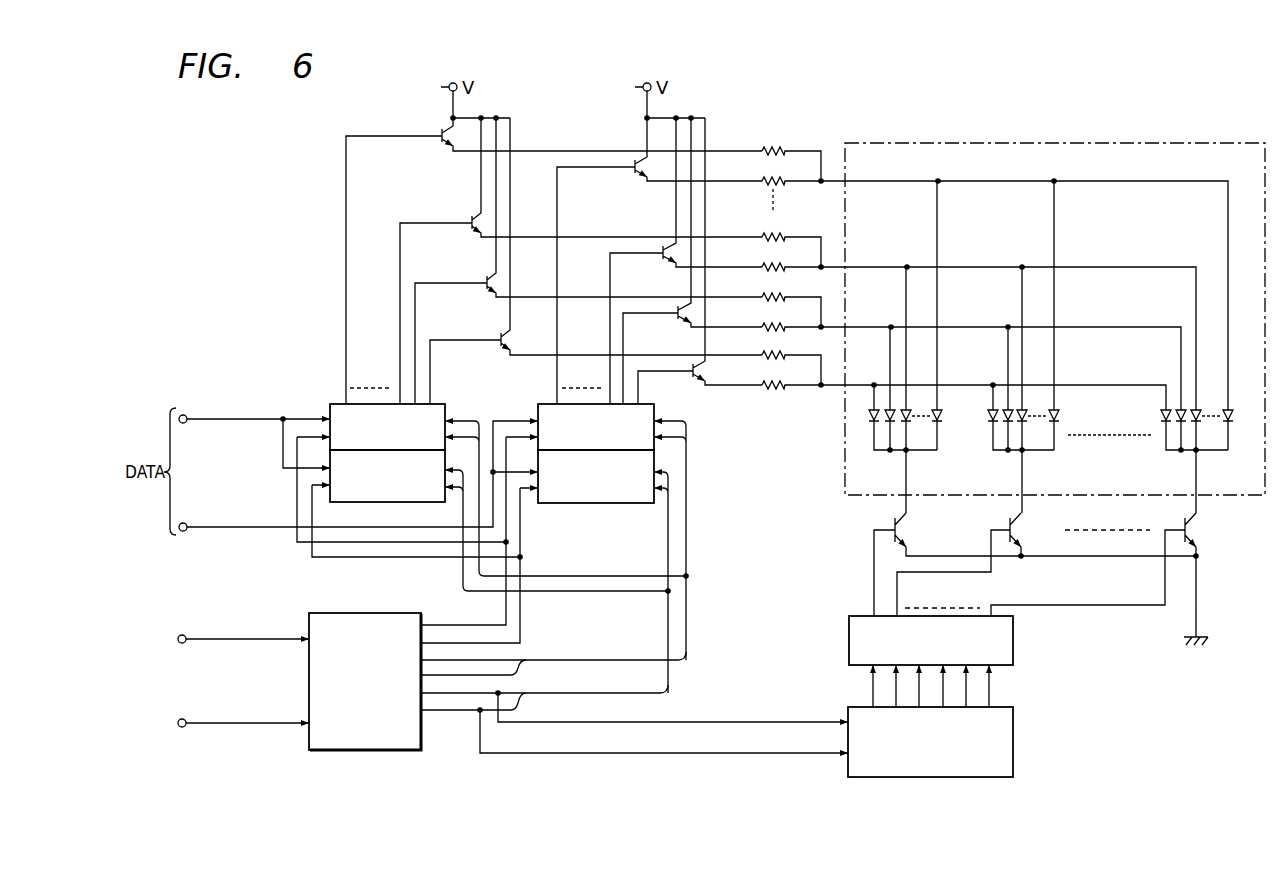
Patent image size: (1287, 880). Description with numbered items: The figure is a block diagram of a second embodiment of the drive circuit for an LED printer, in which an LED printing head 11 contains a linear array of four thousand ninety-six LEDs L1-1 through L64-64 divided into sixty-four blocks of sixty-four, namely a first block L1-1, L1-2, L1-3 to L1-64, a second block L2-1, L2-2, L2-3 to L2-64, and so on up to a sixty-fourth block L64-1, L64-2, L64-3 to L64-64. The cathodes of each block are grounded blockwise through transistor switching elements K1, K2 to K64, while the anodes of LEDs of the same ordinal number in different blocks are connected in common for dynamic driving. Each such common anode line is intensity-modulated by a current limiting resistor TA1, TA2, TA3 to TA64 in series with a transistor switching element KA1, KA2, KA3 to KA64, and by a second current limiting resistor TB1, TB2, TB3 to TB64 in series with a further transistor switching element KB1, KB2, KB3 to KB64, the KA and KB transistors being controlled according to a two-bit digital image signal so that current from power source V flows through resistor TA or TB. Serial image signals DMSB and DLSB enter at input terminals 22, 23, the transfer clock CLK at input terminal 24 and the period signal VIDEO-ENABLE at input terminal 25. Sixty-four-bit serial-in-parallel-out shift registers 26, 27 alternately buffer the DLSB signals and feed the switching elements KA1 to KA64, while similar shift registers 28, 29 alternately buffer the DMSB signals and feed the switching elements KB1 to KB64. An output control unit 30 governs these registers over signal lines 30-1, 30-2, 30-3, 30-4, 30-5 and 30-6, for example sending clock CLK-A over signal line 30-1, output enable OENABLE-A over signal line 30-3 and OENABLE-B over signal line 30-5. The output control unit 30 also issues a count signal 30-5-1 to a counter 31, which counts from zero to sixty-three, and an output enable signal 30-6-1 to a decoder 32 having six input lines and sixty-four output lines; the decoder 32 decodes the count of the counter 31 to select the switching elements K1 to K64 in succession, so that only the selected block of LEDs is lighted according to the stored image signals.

The LED printing head 11 is at (1222, 143).
The input terminal 22 is at (184, 414).
The input terminal 23 is at (184, 532).
The input terminal 24 is at (183, 634).
The input terminal 25 is at (183, 728).
The shift register 26 is at (536, 405).
The shift register 27 is at (620, 503).
The shift register 28 is at (444, 404).
The shift register 29 is at (413, 503).
The output control unit 30 is at (388, 612).
The signal line 30-1 is at (436, 627).
The signal line 30-2 is at (436, 645).
The signal line 30-3 is at (436, 662).
The signal line 30-4 is at (436, 677).
The signal line 30-5 is at (436, 695).
The signal line 30-6 is at (436, 712).
The count signal 30-5-1 is at (722, 724).
The output enable signal 30-6-1 is at (722, 755).
The counter 31 is at (1013, 722).
The decoder 32 is at (1013, 632).
The switching element K1 is at (1035, 564).
The switching element K2 is at (975, 564).
The switching element K64 is at (1114, 579).
The switching element KA1 is at (700, 262).
The switching element KA2 is at (692, 261).
The switching element KA3 is at (686, 261).
The switching element KA64 is at (657, 240).
The switching element KB1 is at (596, 261).
The switching element KB2 is at (588, 261).
The switching element KB3 is at (581, 261).
The switching element KB64 is at (467, 212).
The current limiting resistor TA1 is at (959, 385).
The current limiting resistor TA2 is at (965, 356).
The current limiting resistor TA3 is at (971, 327).
The current limiting resistor TA64 is at (987, 284).
The current limiting resistor TB1 is at (786, 359).
The current limiting resistor TB2 is at (785, 301).
The current limiting resistor TB3 is at (784, 241).
The current limiting resistor TB64 is at (784, 154).
The LED L1-1 is at (870, 444).
The LED L1-2 is at (889, 444).
The LED L1-3 is at (908, 444).
The LED L1-64 is at (938, 444).
The LED L2-1 is at (990, 444).
The LED L2-2 is at (1007, 444).
The LED L2-3 is at (1024, 444).
The LED L2-64 is at (1055, 444).
The LED L64-1 is at (1163, 444).
The LED L64-2 is at (1180, 444).
The LED L64-3 is at (1198, 444).
The LED L64-64 is at (1229, 444).